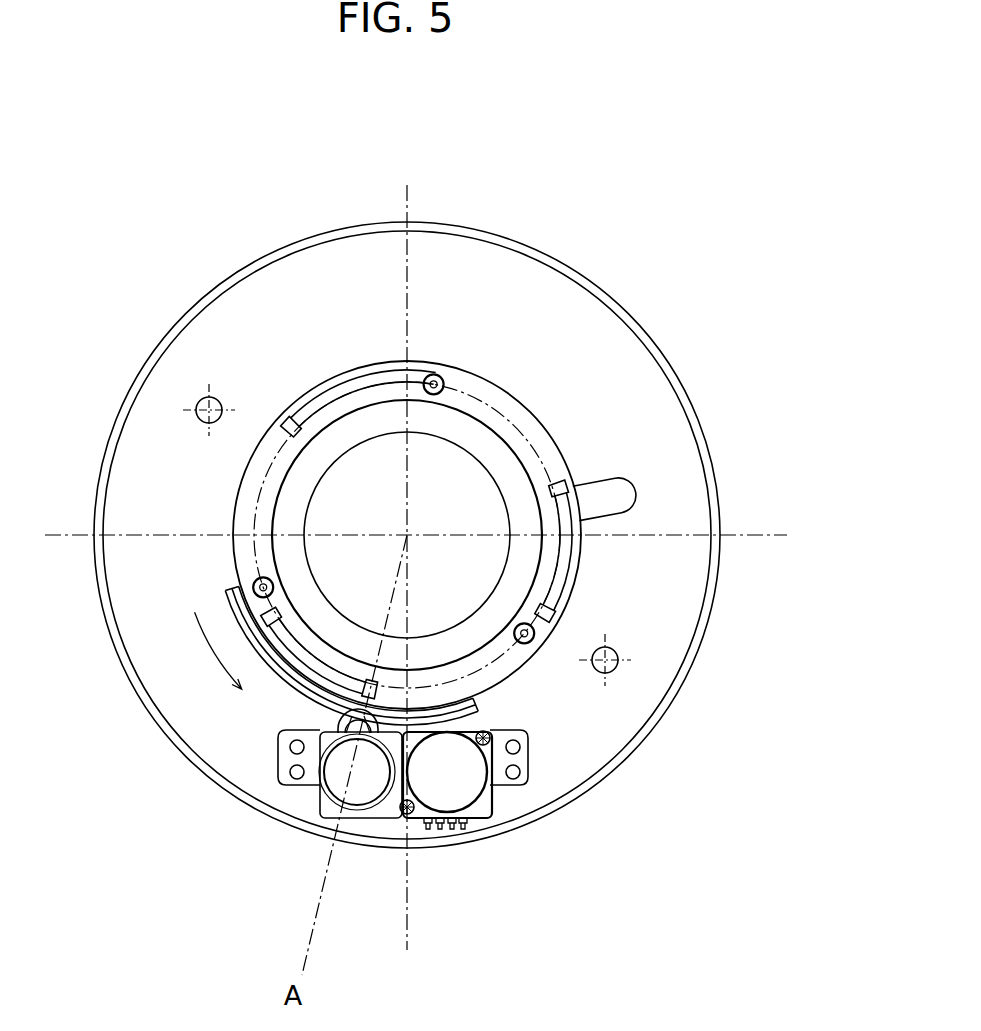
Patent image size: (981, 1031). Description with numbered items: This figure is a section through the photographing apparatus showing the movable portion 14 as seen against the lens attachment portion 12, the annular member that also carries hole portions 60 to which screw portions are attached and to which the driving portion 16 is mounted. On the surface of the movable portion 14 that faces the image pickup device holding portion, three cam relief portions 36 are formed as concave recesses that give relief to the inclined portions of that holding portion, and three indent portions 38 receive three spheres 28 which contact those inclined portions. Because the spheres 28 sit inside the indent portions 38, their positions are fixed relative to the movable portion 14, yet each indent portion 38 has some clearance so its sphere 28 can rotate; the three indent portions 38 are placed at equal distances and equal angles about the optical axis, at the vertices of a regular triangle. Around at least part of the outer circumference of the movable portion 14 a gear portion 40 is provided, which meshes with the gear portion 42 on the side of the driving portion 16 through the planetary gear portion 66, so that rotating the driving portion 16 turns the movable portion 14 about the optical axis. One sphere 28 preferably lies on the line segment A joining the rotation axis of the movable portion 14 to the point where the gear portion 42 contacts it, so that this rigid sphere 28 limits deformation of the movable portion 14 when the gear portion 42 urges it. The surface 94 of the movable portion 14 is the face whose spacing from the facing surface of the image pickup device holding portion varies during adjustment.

The lens attachment portion 12 is at (667, 362).
The movable portion 14 is at (503, 403).
The driving portion 16 is at (480, 803).
The sphere 28 is at (443, 374).
The cam relief portion 36 is at (363, 387).
The indent portion 38 is at (428, 374).
The gear portion 40 is at (295, 687).
The gear portion 42 is at (352, 724).
The hole portion 60 is at (203, 397).
The planetary gear portion 66 is at (356, 722).
The surface 94 is at (547, 450).